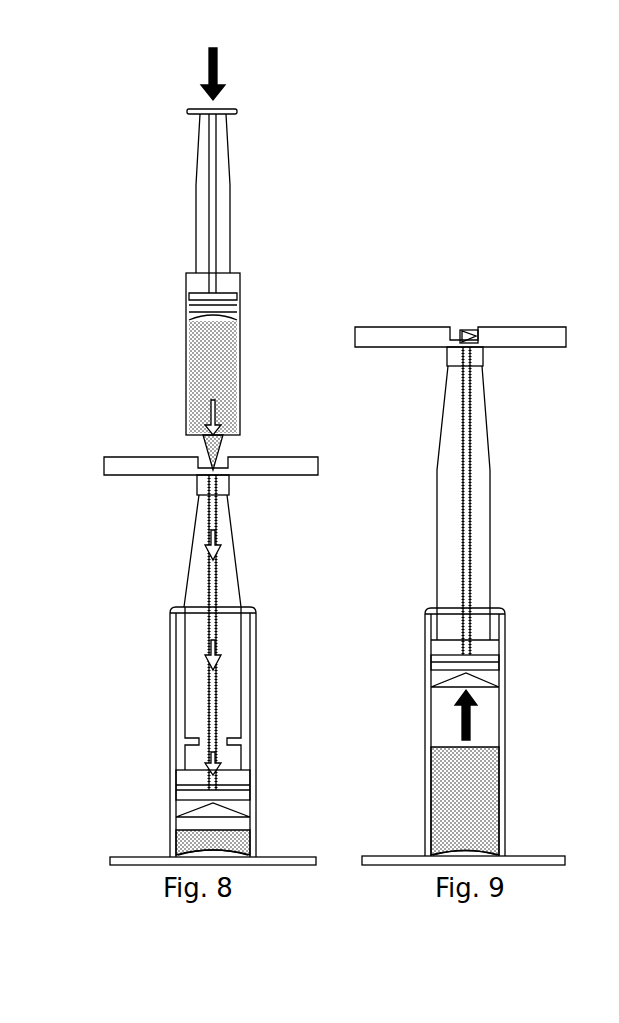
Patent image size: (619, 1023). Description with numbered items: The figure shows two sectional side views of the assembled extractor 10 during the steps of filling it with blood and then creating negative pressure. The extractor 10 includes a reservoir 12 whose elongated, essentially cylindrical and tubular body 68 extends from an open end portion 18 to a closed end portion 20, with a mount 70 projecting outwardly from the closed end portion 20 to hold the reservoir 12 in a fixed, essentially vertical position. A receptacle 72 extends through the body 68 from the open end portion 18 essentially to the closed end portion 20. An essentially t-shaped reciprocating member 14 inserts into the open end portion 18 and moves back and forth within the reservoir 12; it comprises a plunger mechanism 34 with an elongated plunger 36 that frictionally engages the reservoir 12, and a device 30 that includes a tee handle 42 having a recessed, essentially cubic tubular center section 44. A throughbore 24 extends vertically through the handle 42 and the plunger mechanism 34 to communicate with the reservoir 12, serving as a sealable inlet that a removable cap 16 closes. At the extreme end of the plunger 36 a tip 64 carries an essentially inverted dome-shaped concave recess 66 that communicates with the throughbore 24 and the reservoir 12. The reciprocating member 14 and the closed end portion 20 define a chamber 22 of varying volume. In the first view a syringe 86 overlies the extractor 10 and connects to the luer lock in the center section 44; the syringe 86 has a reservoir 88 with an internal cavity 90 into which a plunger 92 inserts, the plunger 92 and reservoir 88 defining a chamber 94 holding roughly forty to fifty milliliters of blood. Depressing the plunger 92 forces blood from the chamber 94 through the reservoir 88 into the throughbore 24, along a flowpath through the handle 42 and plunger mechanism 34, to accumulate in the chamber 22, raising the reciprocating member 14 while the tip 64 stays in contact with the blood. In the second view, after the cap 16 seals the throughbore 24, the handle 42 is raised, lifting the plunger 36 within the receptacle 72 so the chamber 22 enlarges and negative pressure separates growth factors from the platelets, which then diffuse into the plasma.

In FIG. 8, the extractor 10 is at (88, 625).
In FIG. 9, the extractor 10 is at (405, 522).
In FIG. 8, the reservoir 12 is at (170, 672).
In FIG. 9, the reservoir 12 is at (428, 655).
In FIG. 8, the reciprocating member 14 is at (184, 496).
In FIG. 9, the reciprocating member 14 is at (440, 372).
In FIG. 9, the cap 16 is at (462, 333).
In FIG. 8, the open end portion 18 is at (182, 607).
In FIG. 9, the open end portion 18 is at (428, 608).
In FIG. 8, the closed end portion 20 is at (176, 846).
In FIG. 9, the closed end portion 20 is at (445, 848).
In FIG. 8, the chamber 22 is at (176, 830).
In FIG. 9, the chamber 22 is at (440, 735).
In FIG. 8, the throughbore 24 is at (216, 512).
In FIG. 9, the throughbore 24 is at (468, 405).
In FIG. 8, the device 30 is at (236, 487).
In FIG. 9, the device 30 is at (496, 352).
In FIG. 8, the plunger mechanism 34 is at (226, 633).
In FIG. 9, the plunger mechanism 34 is at (486, 500).
In FIG. 8, the plunger 36 is at (180, 782).
In FIG. 9, the plunger 36 is at (437, 655).
In FIG. 8, the handle 42 is at (245, 466).
In FIG. 9, the handle 42 is at (510, 338).
In FIG. 8, the center section 44 is at (197, 490).
In FIG. 9, the center section 44 is at (447, 358).
In FIG. 8, the tip 64 is at (195, 808).
In FIG. 9, the tip 64 is at (500, 678).
In FIG. 8, the recess 66 is at (222, 818).
In FIG. 9, the recess 66 is at (500, 715).
In FIG. 8, the body 68 is at (256, 683).
In FIG. 9, the body 68 is at (508, 635).
In FIG. 8, the mount 70 is at (275, 862).
In FIG. 9, the mount 70 is at (520, 862).
In FIG. 8, the receptacle 72 is at (185, 713).
In FIG. 9, the receptacle 72 is at (432, 720).
In FIG. 8, the syringe 86 is at (178, 292).
In FIG. 8, the reservoir 88 is at (240, 350).
In FIG. 8, the cavity 90 is at (198, 360).
In FIG. 8, the plunger 92 is at (196, 185).
In FIG. 8, the chamber 94 is at (228, 378).